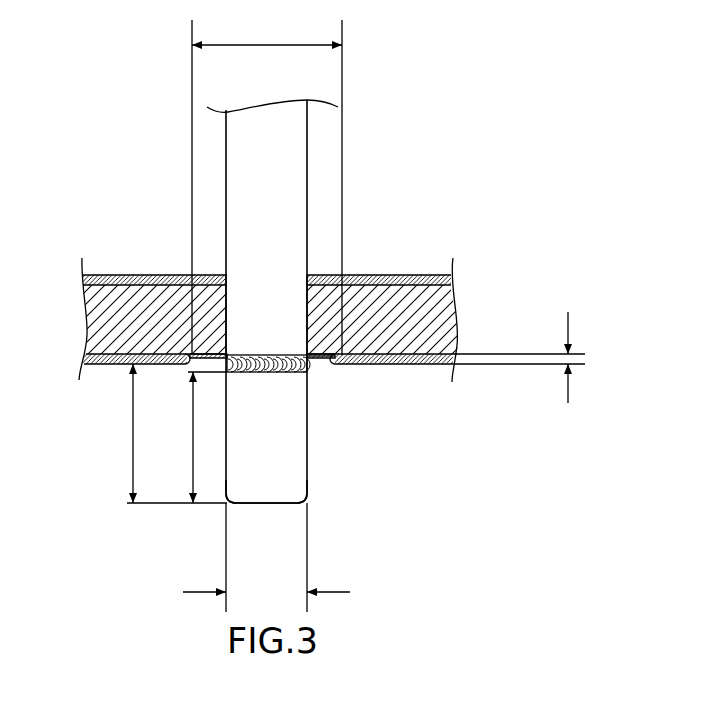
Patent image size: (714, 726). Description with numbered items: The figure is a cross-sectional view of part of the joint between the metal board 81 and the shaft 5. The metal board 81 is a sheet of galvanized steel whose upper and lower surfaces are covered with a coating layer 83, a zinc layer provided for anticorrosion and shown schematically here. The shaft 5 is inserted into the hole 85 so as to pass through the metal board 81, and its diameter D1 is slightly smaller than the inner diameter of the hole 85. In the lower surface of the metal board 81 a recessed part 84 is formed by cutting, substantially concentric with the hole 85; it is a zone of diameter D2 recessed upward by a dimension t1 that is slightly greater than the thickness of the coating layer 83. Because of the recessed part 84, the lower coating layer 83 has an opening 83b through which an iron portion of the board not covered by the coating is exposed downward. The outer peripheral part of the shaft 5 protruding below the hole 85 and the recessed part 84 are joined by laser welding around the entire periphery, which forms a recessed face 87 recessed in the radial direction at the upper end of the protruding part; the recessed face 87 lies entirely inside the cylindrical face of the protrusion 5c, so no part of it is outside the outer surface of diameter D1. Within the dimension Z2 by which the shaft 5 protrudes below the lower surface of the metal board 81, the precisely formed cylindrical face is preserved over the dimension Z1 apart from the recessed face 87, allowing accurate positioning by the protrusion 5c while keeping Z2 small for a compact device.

The shaft 5 is at (310, 166).
The protrusion 5c is at (292, 478).
The metal board 81 is at (417, 304).
The coating layer 83 is at (97, 365).
The opening 83b is at (343, 363).
The recessed part 84 is at (318, 362).
The hole 85 is at (307, 328).
The recessed face 87 is at (267, 373).
The diameter of the shaft D1 is at (266, 557).
The diameter of the recessed part D2 is at (267, 186).
The dimension of the cylindrical face Z1 is at (194, 437).
The dimension of the shaft protruding downward Z2 is at (164, 433).
The dimension of the recessed part depth t1 is at (527, 357).